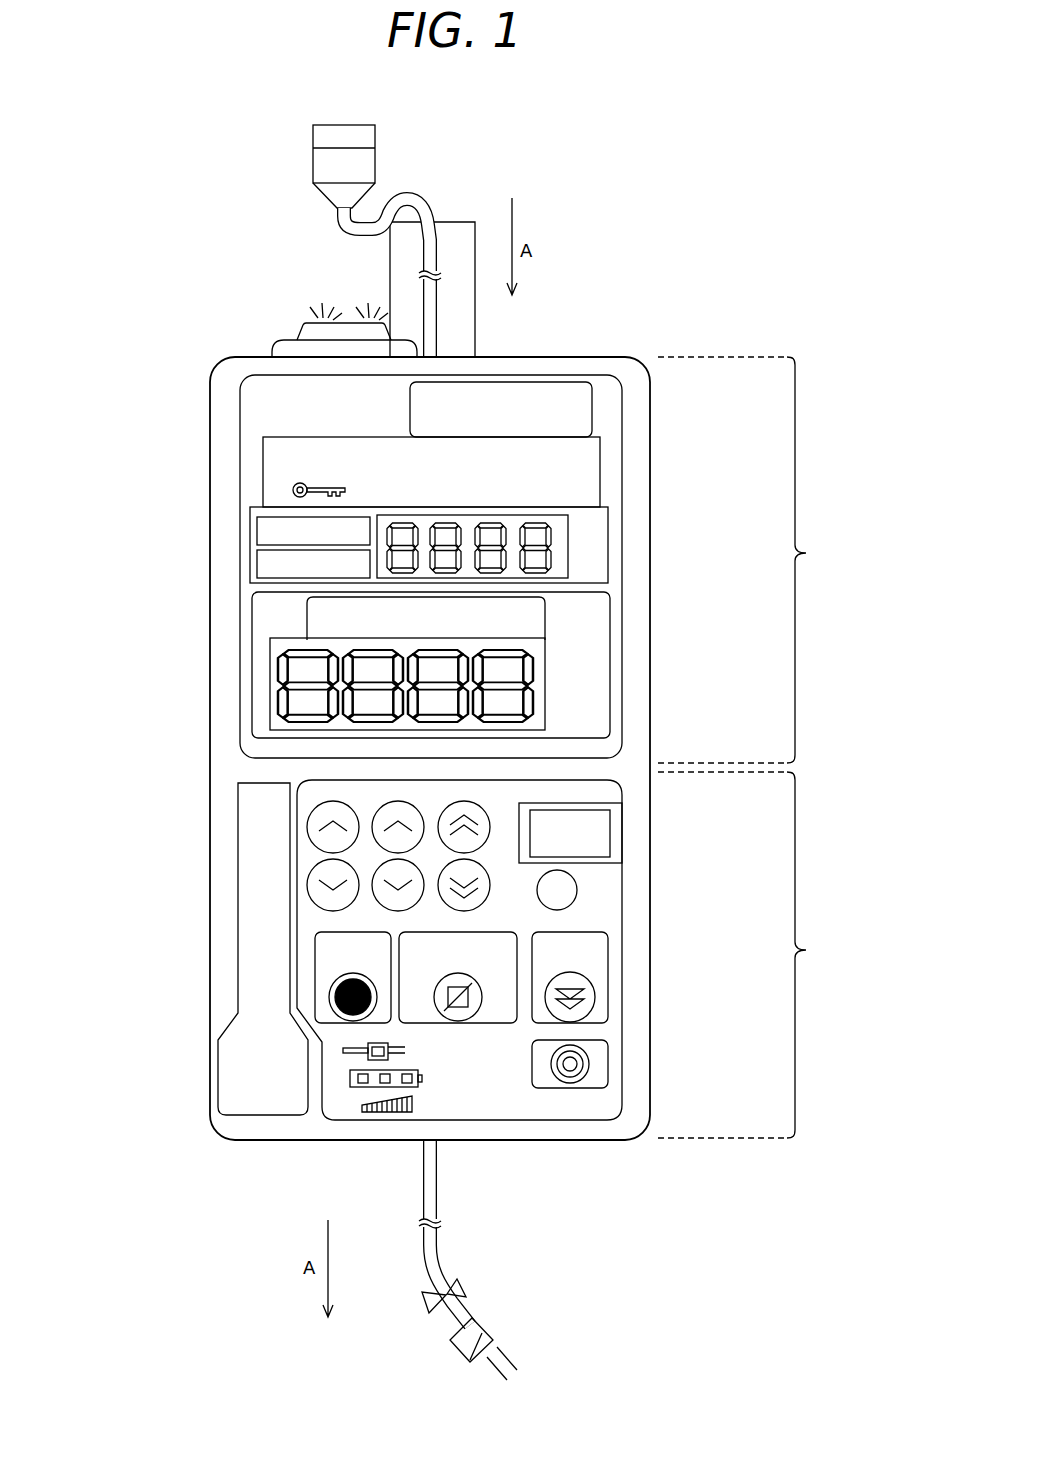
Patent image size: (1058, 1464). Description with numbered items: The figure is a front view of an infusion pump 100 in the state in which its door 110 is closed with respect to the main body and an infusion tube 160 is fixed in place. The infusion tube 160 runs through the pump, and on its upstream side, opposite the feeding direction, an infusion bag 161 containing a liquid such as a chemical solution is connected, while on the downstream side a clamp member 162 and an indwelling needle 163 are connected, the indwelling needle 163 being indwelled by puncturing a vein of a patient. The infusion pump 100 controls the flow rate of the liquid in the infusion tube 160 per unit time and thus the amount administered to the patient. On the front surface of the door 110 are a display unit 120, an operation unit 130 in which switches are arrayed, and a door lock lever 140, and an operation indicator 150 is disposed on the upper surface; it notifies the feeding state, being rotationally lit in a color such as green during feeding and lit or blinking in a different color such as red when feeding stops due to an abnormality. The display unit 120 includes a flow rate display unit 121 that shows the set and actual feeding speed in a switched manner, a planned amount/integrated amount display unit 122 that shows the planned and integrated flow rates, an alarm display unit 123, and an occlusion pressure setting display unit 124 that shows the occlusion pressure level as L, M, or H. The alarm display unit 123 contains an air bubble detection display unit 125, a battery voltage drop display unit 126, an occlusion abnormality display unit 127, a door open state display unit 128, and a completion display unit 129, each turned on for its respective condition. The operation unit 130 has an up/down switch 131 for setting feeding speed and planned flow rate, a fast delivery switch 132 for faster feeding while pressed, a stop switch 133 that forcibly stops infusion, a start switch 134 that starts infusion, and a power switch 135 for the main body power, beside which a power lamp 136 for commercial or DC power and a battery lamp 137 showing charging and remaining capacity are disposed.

The infusion pump 100 is at (640, 349).
The door 110 is at (200, 1022).
The display unit 120 is at (494, 534).
The flow rate display unit 121 is at (270, 668).
The planned amount/integrated amount display unit 122 is at (570, 540).
The alarm display unit 123 is at (427, 449).
The occlusion pressure setting display unit 124 is at (562, 385).
The air bubble detection display unit 125 is at (568, 457).
The battery voltage drop display unit 126 is at (560, 490).
The occlusion abnormality display unit 127 is at (395, 457).
The door open state display unit 128 is at (300, 458).
The completion display unit 129 is at (393, 490).
The operation unit 130 is at (499, 970).
The up/down switch 131 is at (433, 970).
The fast delivery switch 132 is at (608, 995).
The stop switch 133 is at (470, 1015).
The start switch 134 is at (330, 995).
The power switch 135 is at (608, 1064).
The power lamp 136 is at (343, 1058).
The battery lamp 137 is at (350, 1080).
The door lock lever 140 is at (262, 878).
The operation indicator 150 is at (298, 328).
The infusion tube 160 is at (345, 227).
The infusion bag 161 is at (322, 168).
The clamp member 162 is at (462, 1288).
The indwelling needle 163 is at (493, 1325).